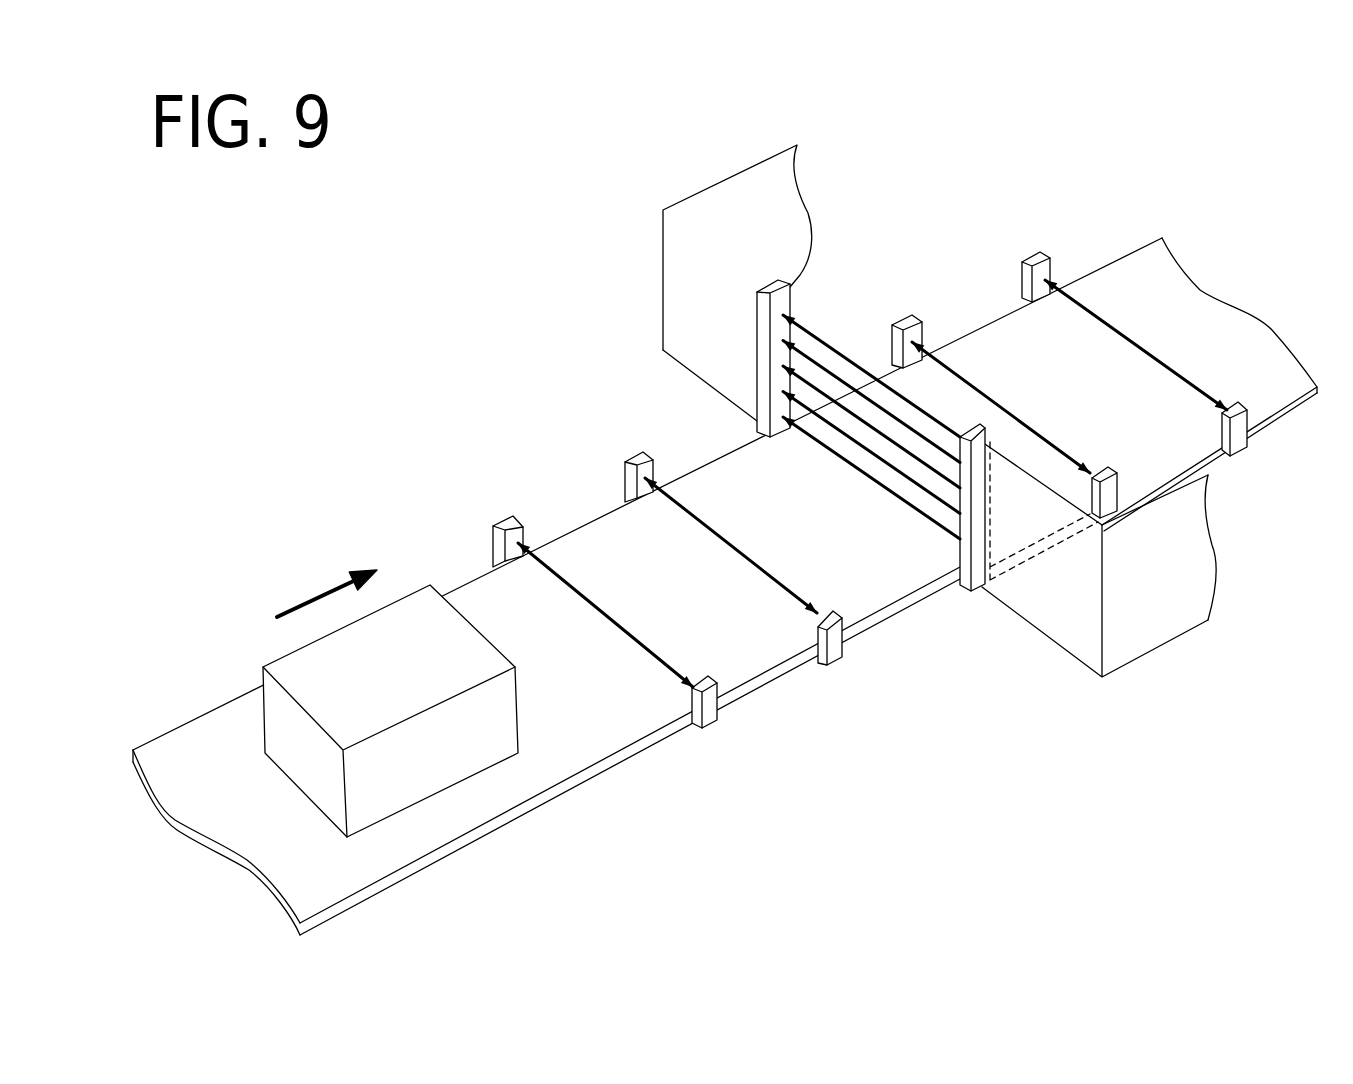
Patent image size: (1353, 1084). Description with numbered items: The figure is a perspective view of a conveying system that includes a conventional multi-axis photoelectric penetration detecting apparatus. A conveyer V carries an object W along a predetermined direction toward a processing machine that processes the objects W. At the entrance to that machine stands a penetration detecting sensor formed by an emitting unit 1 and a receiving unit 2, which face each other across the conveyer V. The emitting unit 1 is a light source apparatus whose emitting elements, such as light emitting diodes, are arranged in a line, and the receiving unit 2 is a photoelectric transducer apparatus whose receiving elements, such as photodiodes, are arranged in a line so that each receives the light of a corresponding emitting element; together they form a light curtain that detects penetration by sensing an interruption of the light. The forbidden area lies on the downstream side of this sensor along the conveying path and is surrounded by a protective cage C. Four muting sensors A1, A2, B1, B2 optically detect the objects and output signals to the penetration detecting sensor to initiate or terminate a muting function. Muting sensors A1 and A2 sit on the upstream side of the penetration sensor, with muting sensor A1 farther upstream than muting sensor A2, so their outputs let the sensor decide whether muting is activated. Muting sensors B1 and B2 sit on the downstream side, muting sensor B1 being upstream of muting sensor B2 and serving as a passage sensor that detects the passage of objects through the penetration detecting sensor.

The conveyer V is at (205, 715).
The object W is at (280, 653).
The muting sensor A1 is at (500, 517).
The muting sensor A2 is at (627, 457).
The muting sensor B1 is at (902, 323).
The muting sensor B2 is at (1027, 257).
The emitting unit 1 is at (977, 595).
The receiving unit 2 is at (770, 280).
The protective cage C is at (1173, 640).